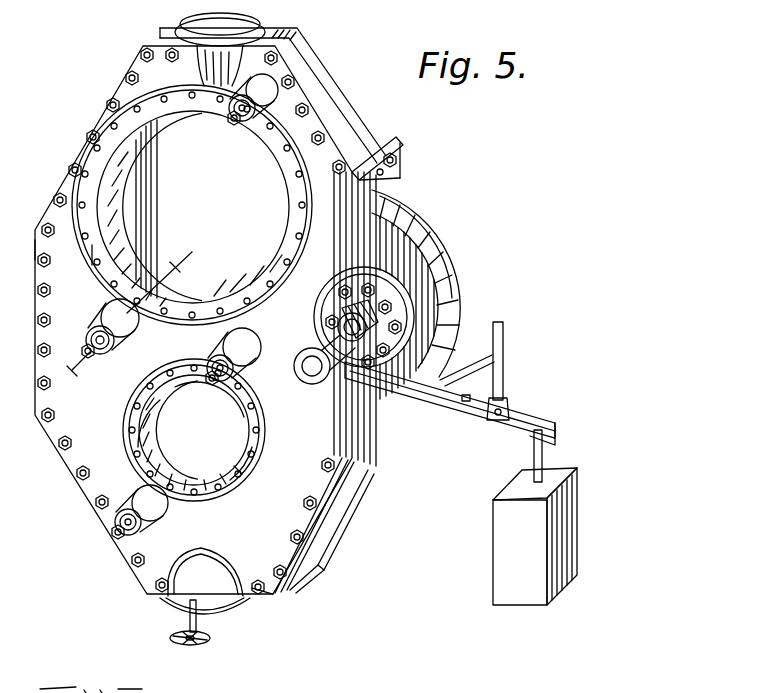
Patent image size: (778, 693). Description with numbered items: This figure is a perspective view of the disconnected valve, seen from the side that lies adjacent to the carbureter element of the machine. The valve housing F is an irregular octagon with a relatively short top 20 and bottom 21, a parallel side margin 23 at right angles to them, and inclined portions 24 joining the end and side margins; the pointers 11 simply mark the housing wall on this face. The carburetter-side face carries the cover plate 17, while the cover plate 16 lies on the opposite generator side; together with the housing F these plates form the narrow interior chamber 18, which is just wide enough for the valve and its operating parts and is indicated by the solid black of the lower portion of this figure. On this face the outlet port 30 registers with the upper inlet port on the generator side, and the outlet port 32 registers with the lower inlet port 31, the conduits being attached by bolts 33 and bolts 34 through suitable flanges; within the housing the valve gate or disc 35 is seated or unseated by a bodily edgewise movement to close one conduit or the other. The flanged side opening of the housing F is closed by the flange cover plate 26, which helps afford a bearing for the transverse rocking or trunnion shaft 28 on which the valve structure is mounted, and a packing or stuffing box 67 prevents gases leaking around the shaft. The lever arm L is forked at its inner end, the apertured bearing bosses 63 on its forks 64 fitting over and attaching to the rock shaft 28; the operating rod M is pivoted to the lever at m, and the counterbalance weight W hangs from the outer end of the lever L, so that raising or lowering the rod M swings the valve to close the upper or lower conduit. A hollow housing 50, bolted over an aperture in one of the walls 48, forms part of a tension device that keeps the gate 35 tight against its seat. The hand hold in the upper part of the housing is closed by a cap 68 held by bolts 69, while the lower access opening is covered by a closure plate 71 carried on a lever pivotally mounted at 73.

The cap 68 is at (200, 25).
The top 20 is at (286, 29).
The inclined portions 24 is at (90, 150).
The hollow housing 50 is at (150, 493).
The bottom 21 is at (395, 160).
The valve housing F is at (48, 204).
The valve gate or disc 35 is at (192, 205).
The casing wall 11 is at (133, 312).
The bolts 33 is at (303, 238).
The flange cover plate 26 is at (437, 247).
The outlet port 30 is at (137, 267).
The cover plate 16 is at (398, 328).
The packing or stuffing box 67 is at (318, 328).
The bearing bosses 63 is at (312, 346).
The rocking or trunnion shaft 28 is at (312, 378).
The side margin 23 is at (44, 356).
The operating rod M is at (505, 356).
The forks 64 is at (450, 375).
The lever arm L is at (530, 422).
The lower inlet port 31 is at (200, 384).
The interior chamber 18 is at (200, 464).
The wall 48 is at (230, 372).
The outlet port 32 is at (134, 474).
The bolts 34 is at (250, 460).
The cover plate 17 is at (205, 320).
The counterbalance weight W is at (578, 523).
The pivot m is at (494, 414).
The closure plate 71 is at (182, 598).
The bolts 69 is at (205, 573).
The pivot 73 is at (182, 634).